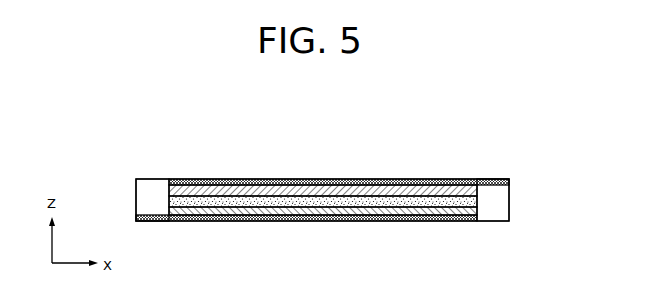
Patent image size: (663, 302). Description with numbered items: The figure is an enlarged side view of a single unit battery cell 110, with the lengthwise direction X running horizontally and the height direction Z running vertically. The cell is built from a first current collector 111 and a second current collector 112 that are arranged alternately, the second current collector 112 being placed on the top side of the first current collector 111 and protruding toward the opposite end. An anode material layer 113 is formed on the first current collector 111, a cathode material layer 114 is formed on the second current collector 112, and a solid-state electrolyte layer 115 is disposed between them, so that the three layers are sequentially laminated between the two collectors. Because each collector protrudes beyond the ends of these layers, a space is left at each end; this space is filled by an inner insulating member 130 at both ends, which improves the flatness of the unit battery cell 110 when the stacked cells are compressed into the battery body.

The unit battery cell 110 is at (296, 176).
The first current collector 111 is at (170, 218).
The second current collector 112 is at (444, 183).
The anode material layer 113 is at (170, 201).
The cathode material layer 114 is at (456, 191).
The solid-state electrolyte layer 115 is at (169, 192).
The inner insulating member 130 is at (160, 186).